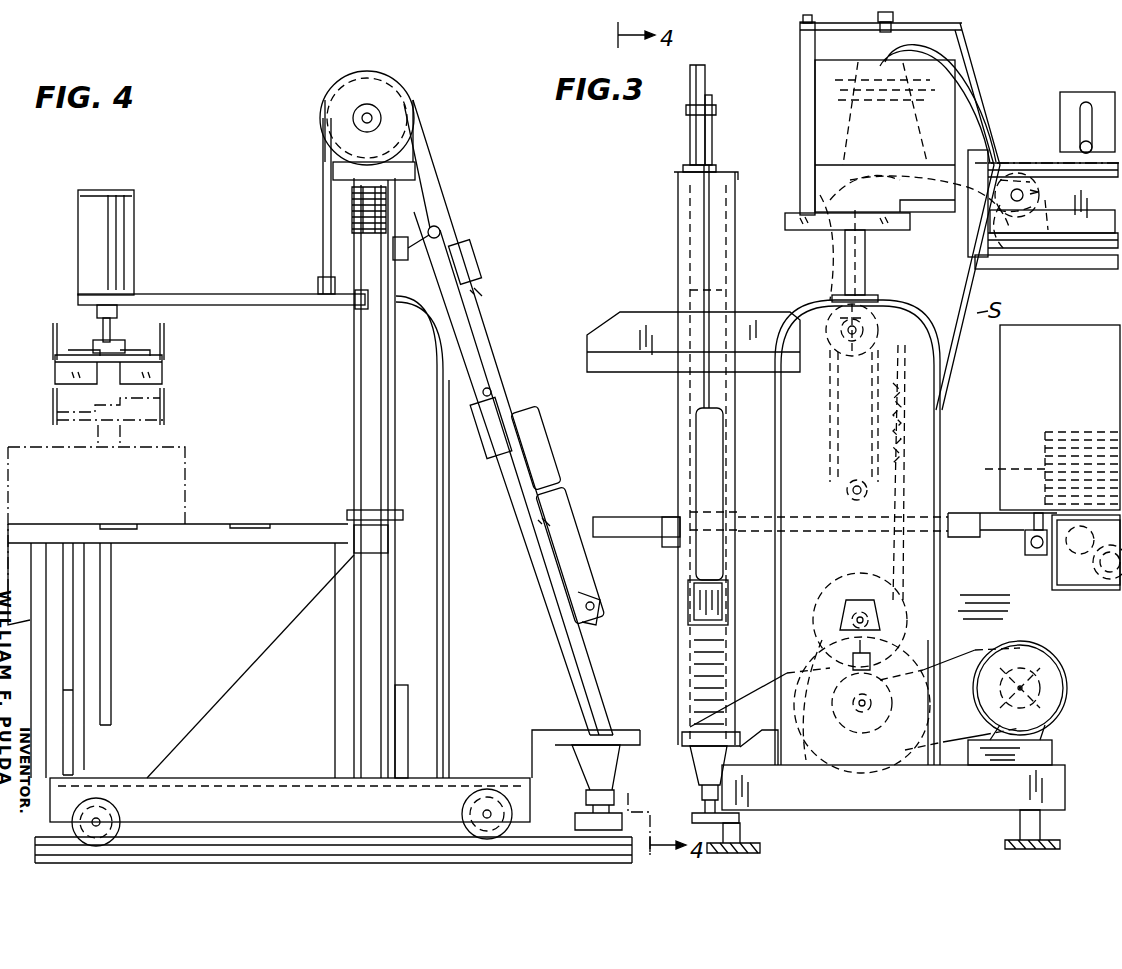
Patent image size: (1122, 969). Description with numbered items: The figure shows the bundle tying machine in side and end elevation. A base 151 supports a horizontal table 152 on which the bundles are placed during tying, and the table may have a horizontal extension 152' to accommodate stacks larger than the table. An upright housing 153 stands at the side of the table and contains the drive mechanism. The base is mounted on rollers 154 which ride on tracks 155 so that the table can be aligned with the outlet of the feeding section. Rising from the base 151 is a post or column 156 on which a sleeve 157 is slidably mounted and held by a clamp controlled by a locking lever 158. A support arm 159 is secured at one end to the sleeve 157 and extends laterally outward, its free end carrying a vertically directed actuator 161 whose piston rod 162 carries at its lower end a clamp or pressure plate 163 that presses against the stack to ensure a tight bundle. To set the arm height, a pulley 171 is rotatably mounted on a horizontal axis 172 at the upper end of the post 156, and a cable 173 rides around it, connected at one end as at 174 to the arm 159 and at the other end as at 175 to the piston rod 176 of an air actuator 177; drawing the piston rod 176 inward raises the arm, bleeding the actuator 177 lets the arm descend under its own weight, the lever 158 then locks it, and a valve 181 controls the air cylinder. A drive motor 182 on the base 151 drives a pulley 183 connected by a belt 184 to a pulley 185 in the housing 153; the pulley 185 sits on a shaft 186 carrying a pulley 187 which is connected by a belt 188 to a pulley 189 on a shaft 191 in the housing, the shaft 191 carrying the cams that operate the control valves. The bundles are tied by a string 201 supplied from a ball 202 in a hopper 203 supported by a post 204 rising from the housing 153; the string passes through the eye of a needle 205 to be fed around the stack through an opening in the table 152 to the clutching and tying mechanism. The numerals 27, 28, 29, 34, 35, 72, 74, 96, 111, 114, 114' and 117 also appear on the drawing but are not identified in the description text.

In FIG. 3, the drive sprocket 27 is at (838, 318).
In FIG. 3, the hopper support shelf 28 is at (846, 255).
In FIG. 3, the sprocket shaft 29 is at (825, 322).
In FIG. 3, the feed channel 34 is at (1017, 258).
In FIG. 3, the feed base plate 35 is at (1083, 273).
In FIG. 3, the feed block 72 is at (972, 233).
In FIG. 3, the guide rails 74 is at (1070, 255).
In FIG. 3, the feed gear 96 is at (1013, 164).
In FIG. 3, the liquid tank 111 is at (1098, 326).
In FIG. 3, the slotted bracket 114 is at (1071, 105).
In FIG. 3, the bracket slot 114' is at (1057, 115).
In FIG. 3, the valve 117 is at (1028, 532).
In FIG. 4, the base 151 is at (160, 792).
In FIG. 3, the base 151 is at (875, 793).
In FIG. 4, the horizontal table 152 is at (181, 651).
In FIG. 4, the horizontal extension 152' is at (96, 523).
In FIG. 3, the horizontal extension 152' is at (770, 516).
In FIG. 4, the upright housing 153 is at (448, 628).
In FIG. 3, the upright housing 153 is at (773, 446).
In FIG. 4, the rollers 154 is at (127, 828).
In FIG. 3, the rollers 154 is at (1040, 826).
In FIG. 4, the tracks 155 is at (283, 843).
In FIG. 3, the tracks 155 is at (748, 843).
In FIG. 4, the post or column 156 is at (354, 427).
In FIG. 4, the sleeve 157 is at (355, 326).
In FIG. 4, the locking lever 158 is at (438, 227).
In FIG. 4, the support arm 159 is at (238, 302).
In FIG. 4, the actuator 161 is at (78, 248).
In FIG. 4, the piston rod 162 is at (95, 328).
In FIG. 4, the clamp or pressure plate 163 is at (56, 378).
In FIG. 3, the clamp or pressure plate 163 is at (637, 368).
In FIG. 4, the pulley 171 is at (342, 98).
In FIG. 3, the pulley 171 is at (706, 76).
In FIG. 4, the horizontal axis 172 is at (358, 118).
In FIG. 3, the horizontal axis 172 is at (718, 112).
In FIG. 4, the cable 173 is at (419, 137).
In FIG. 3, the cable 173 is at (705, 196).
In FIG. 4, the cable connection to arm 174 is at (318, 286).
In FIG. 4, the cable connection to piston rod 175 is at (482, 262).
In FIG. 4, the piston rod 176 is at (487, 306).
In FIG. 4, the air actuator 177 is at (542, 418).
In FIG. 3, the air actuator 177 is at (704, 465).
In FIG. 4, the valve 181 is at (493, 446).
In FIG. 3, the drive motor 182 is at (1047, 673).
In FIG. 3, the pulley 183 is at (1033, 648).
In FIG. 3, the belt 184 is at (955, 742).
In FIG. 3, the pulley 185 is at (833, 764).
In FIG. 3, the shaft 186 is at (866, 773).
In FIG. 3, the pulley 187 is at (828, 778).
In FIG. 3, the belt 188 is at (840, 600).
In FIG. 3, the pulley 189 is at (845, 602).
In FIG. 3, the shaft 191 is at (866, 590).
In FIG. 3, the string 201 is at (960, 53).
In FIG. 3, the ball or source of string 202 is at (977, 72).
In FIG. 3, the hopper 203 is at (820, 91).
In FIG. 3, the post 204 is at (868, 278).
In FIG. 3, the needle 205 is at (998, 117).